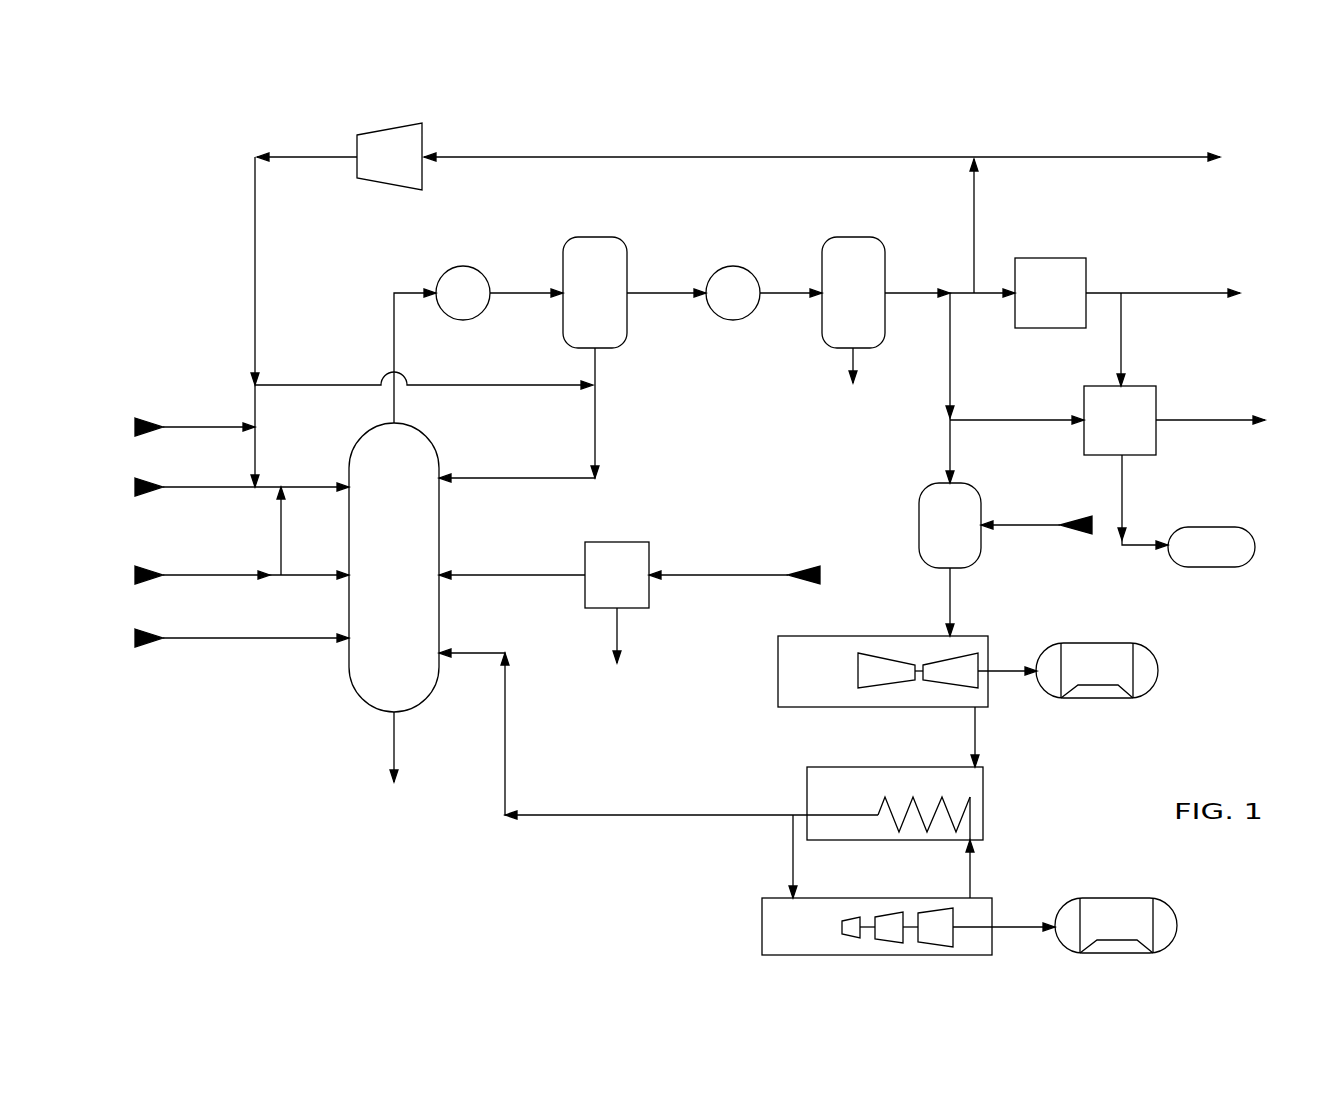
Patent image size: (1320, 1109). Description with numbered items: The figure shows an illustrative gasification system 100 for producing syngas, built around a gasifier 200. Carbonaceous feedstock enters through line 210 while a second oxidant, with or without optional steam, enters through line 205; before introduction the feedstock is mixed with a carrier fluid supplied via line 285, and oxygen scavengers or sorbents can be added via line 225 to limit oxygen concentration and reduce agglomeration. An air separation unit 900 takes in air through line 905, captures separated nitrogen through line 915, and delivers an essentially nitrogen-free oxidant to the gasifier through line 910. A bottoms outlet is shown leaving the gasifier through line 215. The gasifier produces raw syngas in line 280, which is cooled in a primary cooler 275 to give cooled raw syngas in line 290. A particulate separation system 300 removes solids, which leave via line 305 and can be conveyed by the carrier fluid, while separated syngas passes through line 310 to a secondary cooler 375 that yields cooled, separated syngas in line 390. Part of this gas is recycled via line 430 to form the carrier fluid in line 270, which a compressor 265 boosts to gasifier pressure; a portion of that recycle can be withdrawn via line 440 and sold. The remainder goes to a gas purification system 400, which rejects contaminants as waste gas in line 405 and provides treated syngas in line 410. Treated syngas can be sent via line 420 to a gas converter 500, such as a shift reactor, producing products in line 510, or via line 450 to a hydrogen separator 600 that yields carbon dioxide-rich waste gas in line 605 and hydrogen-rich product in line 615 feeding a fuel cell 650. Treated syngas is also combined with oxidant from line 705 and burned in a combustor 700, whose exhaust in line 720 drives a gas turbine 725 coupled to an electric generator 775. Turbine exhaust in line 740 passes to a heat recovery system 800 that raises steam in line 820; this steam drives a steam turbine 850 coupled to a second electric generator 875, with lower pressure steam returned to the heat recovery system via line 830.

The gasification system 100 is at (285, 830).
The gasifier 200 is at (376, 550).
The line 205 is at (298, 643).
The line 210 is at (298, 484).
The bottoms stream 215 is at (392, 751).
The line 225 is at (234, 572).
The compressor 265 is at (371, 164).
The line 270 is at (598, 157).
The primary cooler 275 is at (446, 303).
The line 280 is at (396, 350).
The line 285 is at (187, 424).
The line 290 is at (527, 290).
The particulate separation system 300 is at (577, 306).
The line 305 is at (597, 413).
The line 310 is at (672, 290).
The secondary cooler 375 is at (716, 303).
The line 390 is at (787, 290).
The gas purification system 400 is at (835, 306).
The line 405 is at (851, 382).
The line 410 is at (914, 290).
The line 420 is at (965, 300).
The line 430 is at (976, 232).
The line 440 is at (1122, 160).
The line 450 is at (1027, 418).
The gas converter 500 is at (1032, 306).
The line 510 is at (1187, 290).
The hydrogen separator 600 is at (1102, 429).
The line 605 is at (1212, 418).
The line 615 is at (1124, 505).
The fuel cell 650 is at (1194, 556).
The combustor 700 is at (932, 535).
The line 705 is at (1037, 523).
The line 720 is at (952, 599).
The gas turbine 725 is at (795, 680).
The line 740 is at (973, 731).
The electric generator 775 is at (1079, 674).
The heat recovery system 800 is at (827, 800).
The line 820 is at (610, 813).
The line 830 is at (972, 879).
The steam turbine 850 is at (782, 933).
The electric generator 875 is at (1099, 928).
The air separation unit 900 is at (599, 583).
The line 905 is at (752, 572).
The line 910 is at (507, 572).
The line 915 is at (615, 626).